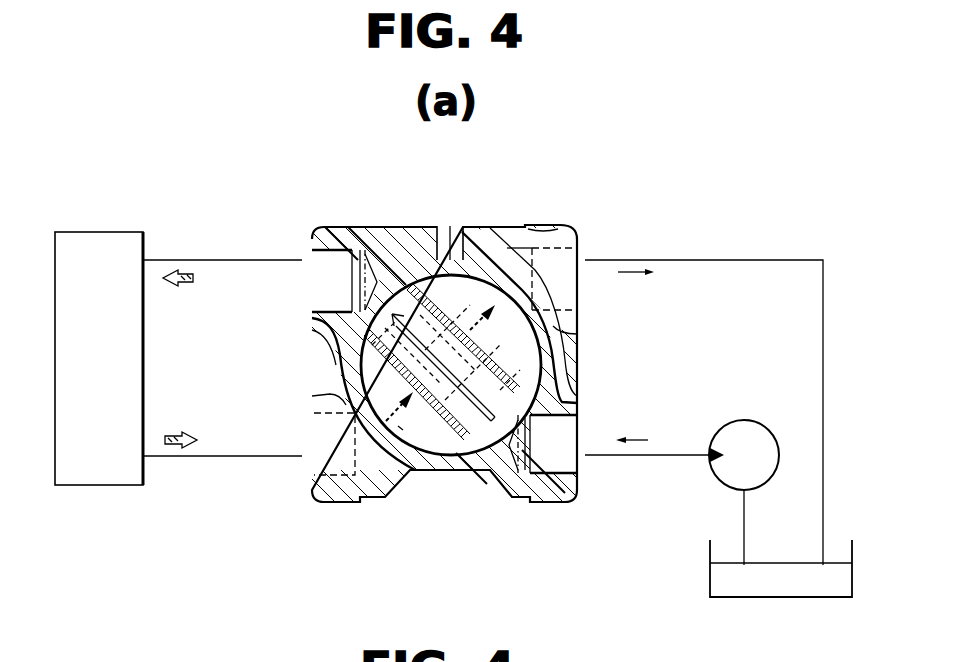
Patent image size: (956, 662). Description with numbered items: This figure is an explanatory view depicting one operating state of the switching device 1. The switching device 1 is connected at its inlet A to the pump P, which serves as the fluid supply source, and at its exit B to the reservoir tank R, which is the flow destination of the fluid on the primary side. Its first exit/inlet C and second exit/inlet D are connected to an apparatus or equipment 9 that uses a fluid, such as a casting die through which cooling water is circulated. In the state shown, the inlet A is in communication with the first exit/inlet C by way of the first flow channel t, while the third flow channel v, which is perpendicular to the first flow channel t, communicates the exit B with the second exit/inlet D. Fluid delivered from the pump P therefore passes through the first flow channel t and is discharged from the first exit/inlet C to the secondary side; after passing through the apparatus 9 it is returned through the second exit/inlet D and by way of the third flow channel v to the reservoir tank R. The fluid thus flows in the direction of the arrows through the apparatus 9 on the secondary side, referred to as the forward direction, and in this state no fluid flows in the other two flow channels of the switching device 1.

The switching device 1 is at (487, 227).
The apparatus or equipment 9 is at (110, 232).
The first flow channel t is at (577, 357).
The third flow channel v is at (420, 432).
The pump P is at (744, 492).
The reservoir tank R is at (800, 598).
The inlet A is at (654, 464).
The exit B is at (704, 396).
The first exit/inlet C is at (222, 247).
The second exit/inlet D is at (222, 476).